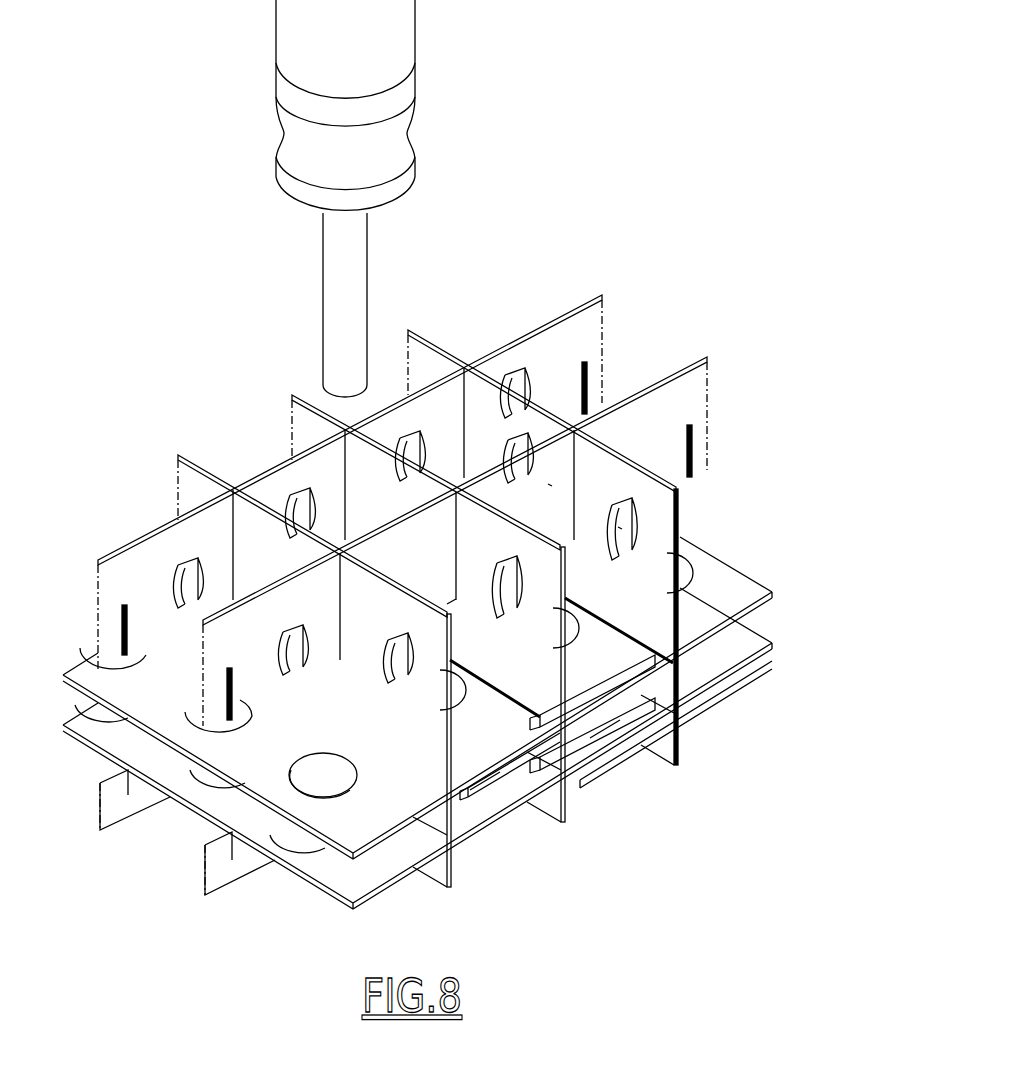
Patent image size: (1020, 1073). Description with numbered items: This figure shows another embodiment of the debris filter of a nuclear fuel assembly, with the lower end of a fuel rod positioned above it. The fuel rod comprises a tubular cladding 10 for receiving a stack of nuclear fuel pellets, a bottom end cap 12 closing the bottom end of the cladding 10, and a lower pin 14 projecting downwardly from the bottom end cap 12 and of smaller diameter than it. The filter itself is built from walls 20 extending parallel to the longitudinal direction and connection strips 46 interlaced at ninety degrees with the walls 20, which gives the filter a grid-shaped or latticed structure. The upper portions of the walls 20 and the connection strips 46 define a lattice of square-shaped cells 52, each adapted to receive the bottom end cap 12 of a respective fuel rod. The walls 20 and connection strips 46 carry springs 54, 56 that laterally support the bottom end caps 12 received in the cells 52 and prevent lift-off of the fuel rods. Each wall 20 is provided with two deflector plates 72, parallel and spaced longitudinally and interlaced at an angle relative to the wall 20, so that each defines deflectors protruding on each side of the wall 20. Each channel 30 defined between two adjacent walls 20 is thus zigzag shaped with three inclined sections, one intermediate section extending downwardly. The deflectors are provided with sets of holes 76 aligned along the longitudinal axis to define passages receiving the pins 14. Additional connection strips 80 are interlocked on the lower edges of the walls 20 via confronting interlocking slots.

The tubular cladding 10 is at (400, 32).
The bottom end cap 12 is at (400, 136).
The lower pin 14 is at (362, 244).
The wall 20 is at (422, 732).
The channel 30 is at (612, 752).
The connection strip 46 is at (421, 544).
The cell 52 is at (402, 591).
The spring 54 is at (618, 527).
The spring 56 is at (528, 385).
The deflector plate 72 is at (793, 637).
The hole 76 is at (322, 800).
The additional connection strip 80 is at (193, 878).